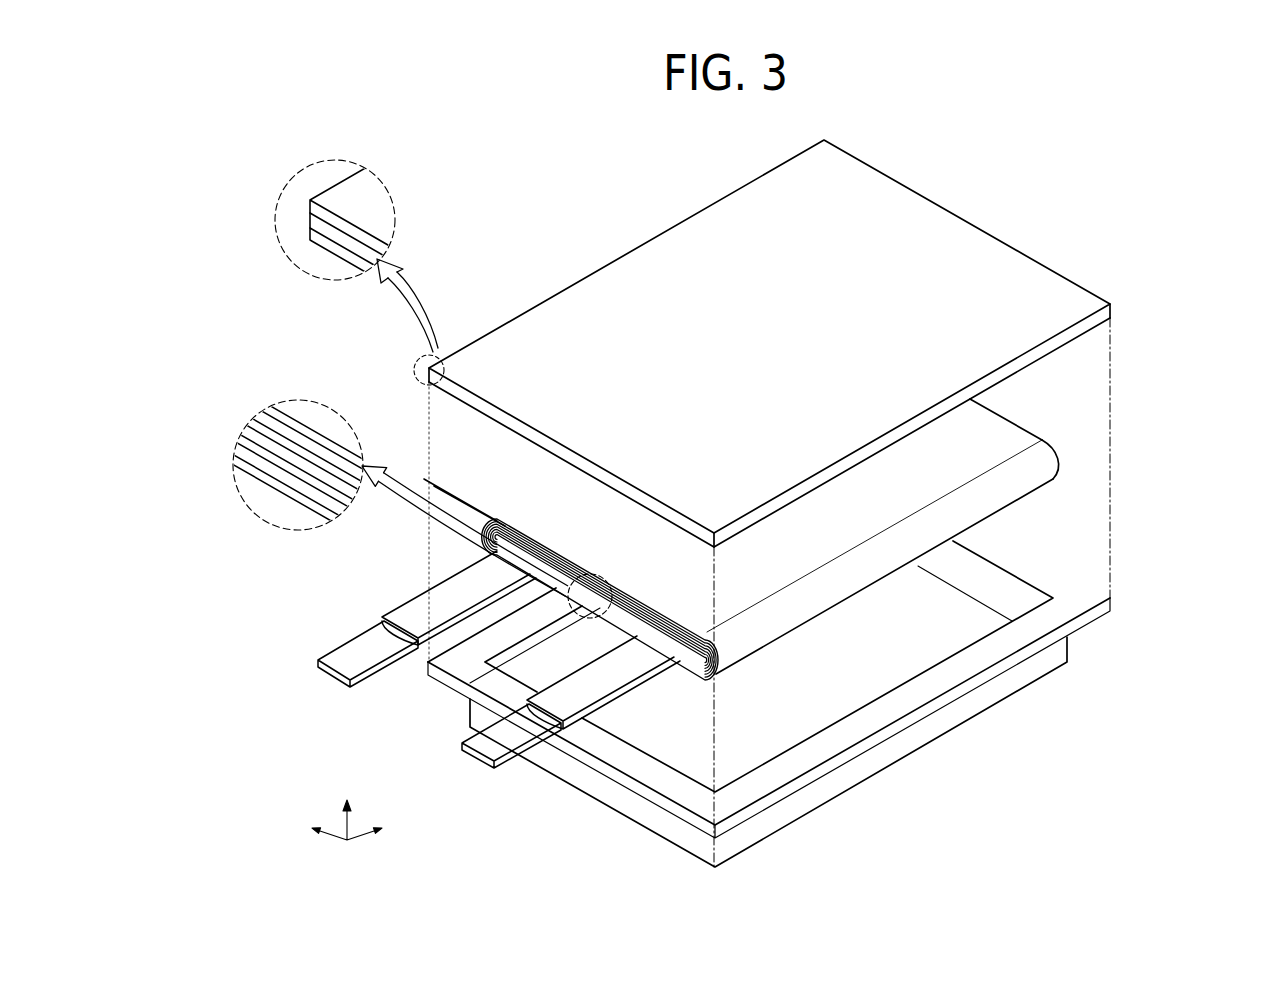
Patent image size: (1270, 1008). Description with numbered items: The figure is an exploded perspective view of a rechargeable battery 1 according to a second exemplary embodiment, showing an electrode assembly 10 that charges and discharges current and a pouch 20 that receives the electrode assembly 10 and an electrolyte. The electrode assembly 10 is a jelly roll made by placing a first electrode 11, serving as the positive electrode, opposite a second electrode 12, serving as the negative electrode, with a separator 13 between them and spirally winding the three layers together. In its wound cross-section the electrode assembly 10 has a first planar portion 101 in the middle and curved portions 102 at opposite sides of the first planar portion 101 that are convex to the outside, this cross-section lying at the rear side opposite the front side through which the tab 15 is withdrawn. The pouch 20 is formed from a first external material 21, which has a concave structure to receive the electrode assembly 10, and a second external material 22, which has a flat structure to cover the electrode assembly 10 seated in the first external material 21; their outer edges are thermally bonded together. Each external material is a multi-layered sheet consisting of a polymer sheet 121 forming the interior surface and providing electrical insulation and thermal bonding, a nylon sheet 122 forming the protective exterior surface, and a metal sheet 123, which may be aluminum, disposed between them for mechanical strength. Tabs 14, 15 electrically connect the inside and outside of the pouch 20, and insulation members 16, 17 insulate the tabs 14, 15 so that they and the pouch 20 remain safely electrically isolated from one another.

The rechargeable battery 1 is at (896, 171).
The electrode assembly 10 is at (892, 577).
The first planar portion 101 is at (733, 582).
The curved portions 102 is at (543, 493).
The first electrode 11 is at (275, 462).
The second electrode 12 is at (298, 452).
The separator 13 is at (320, 478).
The polymer sheet 121 is at (328, 242).
The nylon sheet 122 is at (310, 203).
The metal sheet 123 is at (310, 220).
The tab 14 is at (372, 650).
The tab 15 is at (522, 733).
The insulation member 16 is at (455, 598).
The insulation member 17 is at (603, 690).
The pouch 20 is at (1190, 378).
The first external material 21 is at (1060, 578).
The second external material 22 is at (1070, 342).